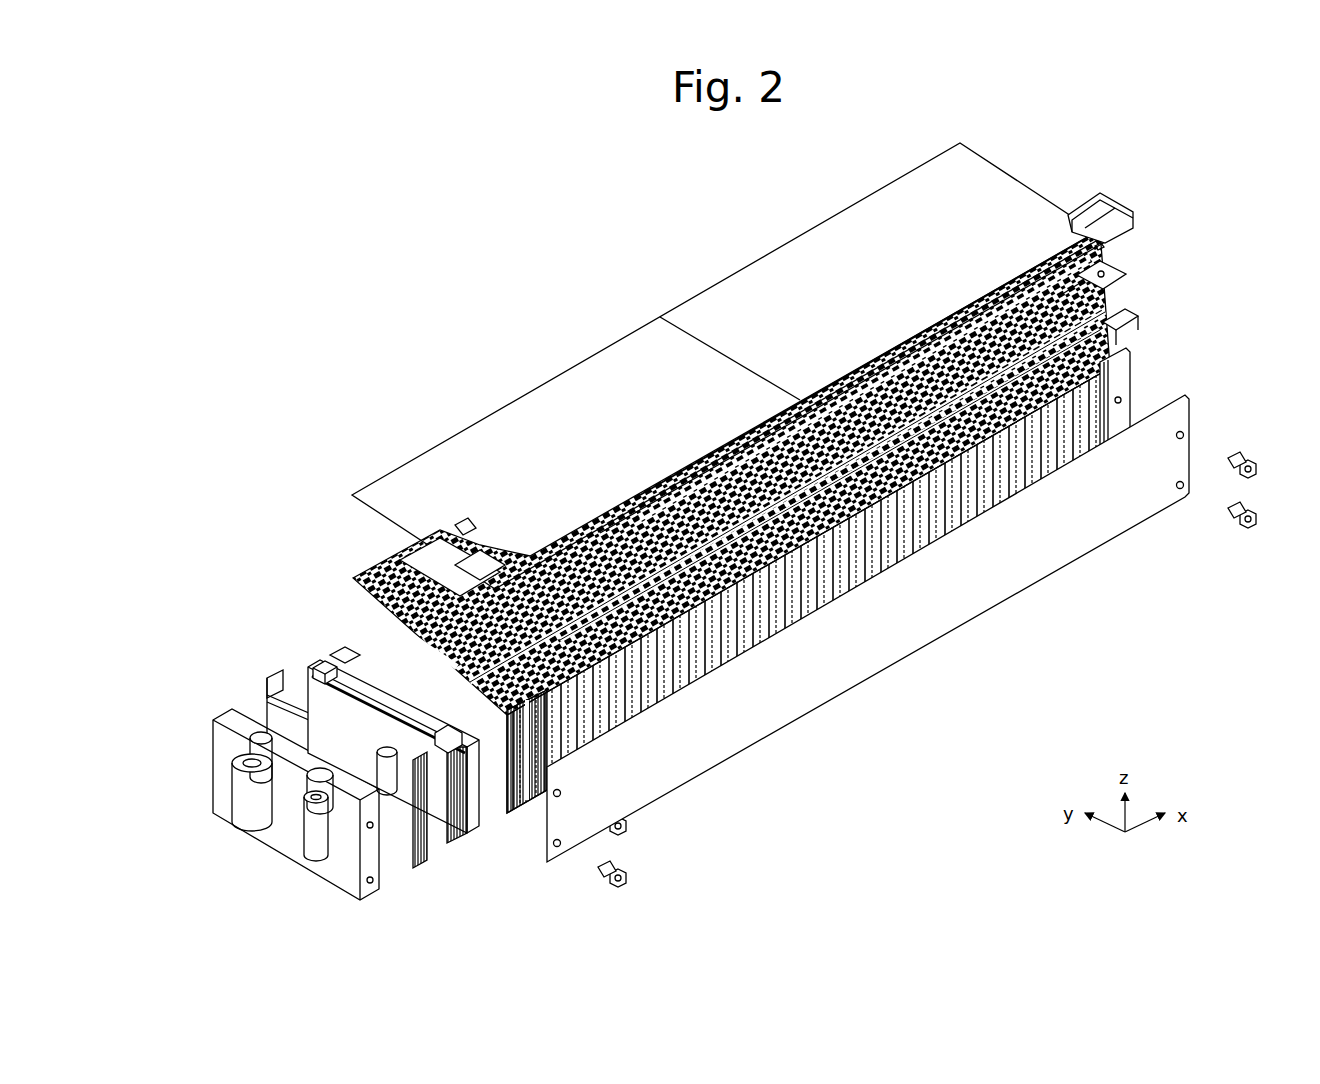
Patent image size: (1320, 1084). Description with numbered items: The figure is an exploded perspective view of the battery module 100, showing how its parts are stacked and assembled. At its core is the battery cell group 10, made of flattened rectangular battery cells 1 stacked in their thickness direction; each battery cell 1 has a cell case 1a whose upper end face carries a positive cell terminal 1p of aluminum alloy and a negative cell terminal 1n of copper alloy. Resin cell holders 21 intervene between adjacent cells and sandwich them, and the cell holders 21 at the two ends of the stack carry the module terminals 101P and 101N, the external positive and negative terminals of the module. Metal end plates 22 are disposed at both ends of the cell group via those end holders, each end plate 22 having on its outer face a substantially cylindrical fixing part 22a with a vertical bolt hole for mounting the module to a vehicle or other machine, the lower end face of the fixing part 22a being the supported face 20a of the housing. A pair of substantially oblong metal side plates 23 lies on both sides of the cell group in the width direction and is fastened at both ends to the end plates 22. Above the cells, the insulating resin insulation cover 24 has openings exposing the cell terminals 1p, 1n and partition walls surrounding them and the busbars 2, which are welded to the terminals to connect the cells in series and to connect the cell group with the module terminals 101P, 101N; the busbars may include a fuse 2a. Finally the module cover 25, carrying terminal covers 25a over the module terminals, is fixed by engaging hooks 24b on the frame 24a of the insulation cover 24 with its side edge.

The battery module 100 is at (356, 264).
The battery cell 1 is at (304, 660).
The cell case 1a is at (300, 690).
The cell terminal 1p is at (330, 655).
The cell terminal 1n is at (462, 728).
The busbar 2 is at (862, 370).
The fuse 2a is at (1077, 277).
The battery cell group 10 is at (797, 520).
The supported face 20a is at (258, 825).
The cell holder 21 is at (1113, 418).
The end plate 22 is at (1130, 385).
The fixing part 22a is at (250, 796).
The side plate 23 is at (1005, 557).
The insulation cover 24 is at (433, 540).
The frame 24a is at (673, 487).
The hook 24b is at (655, 588).
The module cover 25 is at (603, 383).
The terminal cover 25a is at (1100, 204).
The module terminal 101N is at (385, 748).
The module terminal 101P is at (1130, 308).